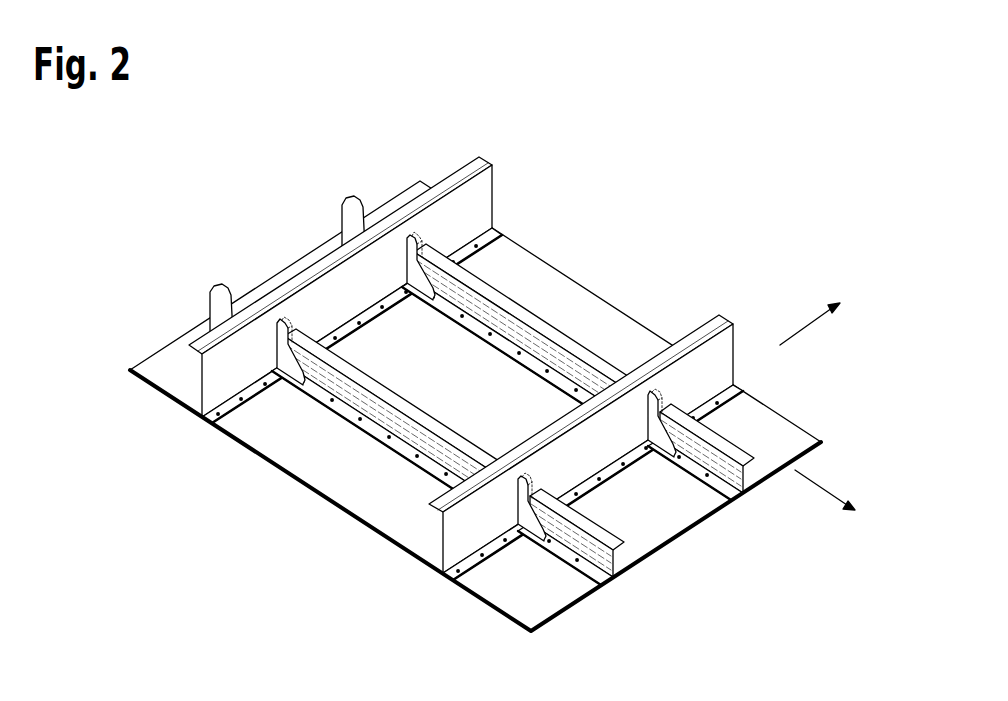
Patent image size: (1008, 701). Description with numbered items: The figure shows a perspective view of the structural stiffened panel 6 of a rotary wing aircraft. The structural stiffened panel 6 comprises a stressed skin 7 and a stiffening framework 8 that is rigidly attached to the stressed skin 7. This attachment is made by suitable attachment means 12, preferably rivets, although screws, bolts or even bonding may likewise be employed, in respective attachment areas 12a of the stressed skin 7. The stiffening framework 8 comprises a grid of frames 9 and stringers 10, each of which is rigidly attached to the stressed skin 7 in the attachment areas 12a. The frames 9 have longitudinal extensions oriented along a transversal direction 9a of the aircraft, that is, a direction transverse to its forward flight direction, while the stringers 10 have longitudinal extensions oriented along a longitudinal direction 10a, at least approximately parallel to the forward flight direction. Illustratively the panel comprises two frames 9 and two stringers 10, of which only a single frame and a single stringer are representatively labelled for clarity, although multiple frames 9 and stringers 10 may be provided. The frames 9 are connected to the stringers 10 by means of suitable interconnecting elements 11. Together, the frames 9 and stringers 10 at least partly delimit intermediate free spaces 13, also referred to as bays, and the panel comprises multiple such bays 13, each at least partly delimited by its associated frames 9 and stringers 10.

The structural stiffened panel 6 is at (460, 385).
The stressed skin 7 is at (475, 406).
The stiffening framework 8 is at (345, 290).
The frame 9 is at (730, 342).
The transversal direction 9a is at (832, 347).
The stringer 10 is at (493, 307).
The longitudinal direction 10a is at (830, 521).
The interconnecting element 11 is at (430, 252).
The attachment means 12 is at (604, 544).
The attachment area 12a is at (539, 615).
The intermediate free space 13 is at (540, 487).